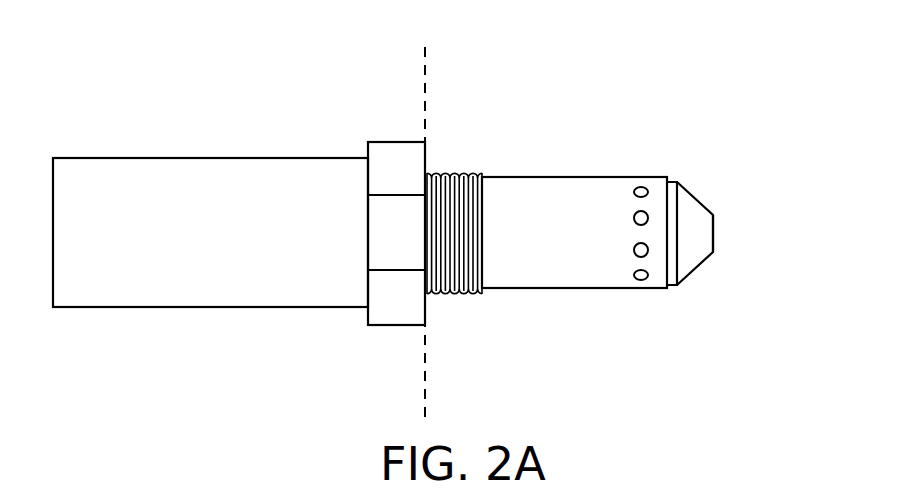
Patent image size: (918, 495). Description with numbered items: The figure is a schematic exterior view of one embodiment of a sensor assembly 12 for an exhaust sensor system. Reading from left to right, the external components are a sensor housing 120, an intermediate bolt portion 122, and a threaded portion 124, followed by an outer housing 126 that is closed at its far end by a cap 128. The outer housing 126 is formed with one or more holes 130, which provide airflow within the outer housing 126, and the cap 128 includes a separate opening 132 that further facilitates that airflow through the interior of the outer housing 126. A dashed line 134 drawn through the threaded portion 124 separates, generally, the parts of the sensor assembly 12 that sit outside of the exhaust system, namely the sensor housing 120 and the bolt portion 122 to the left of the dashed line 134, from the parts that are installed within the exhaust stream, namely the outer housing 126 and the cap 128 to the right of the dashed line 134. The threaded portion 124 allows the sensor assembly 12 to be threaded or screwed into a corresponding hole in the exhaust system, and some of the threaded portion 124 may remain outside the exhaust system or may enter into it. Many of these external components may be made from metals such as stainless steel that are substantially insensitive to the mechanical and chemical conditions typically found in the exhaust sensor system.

The sensor assembly 12 is at (240, 48).
The sensor housing 120 is at (185, 158).
The intermediate bolt portion 122 is at (405, 141).
The threaded portion 124 is at (455, 173).
The outer housing 126 is at (573, 177).
The cap 128 is at (695, 190).
The holes 130 is at (623, 262).
The opening 132 is at (730, 233).
The dashed line 134 is at (425, 400).